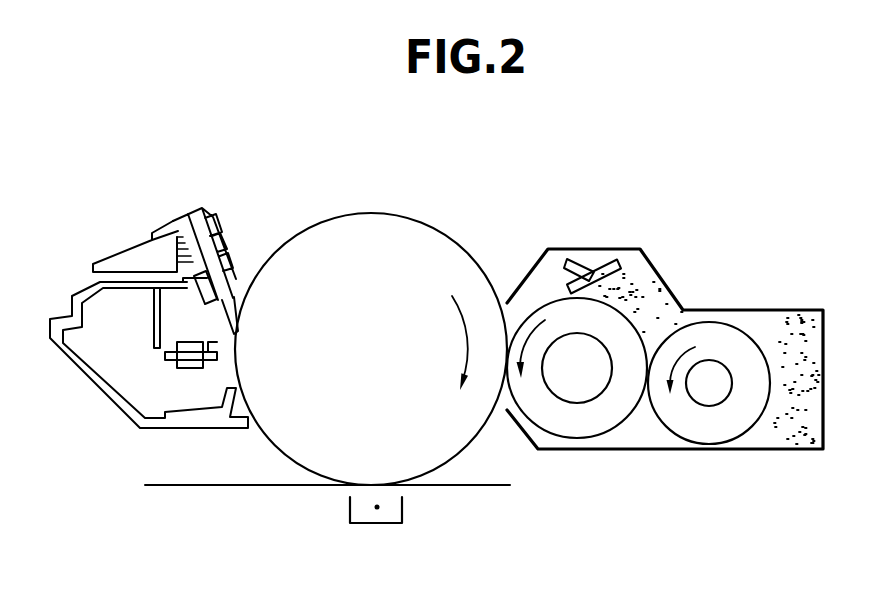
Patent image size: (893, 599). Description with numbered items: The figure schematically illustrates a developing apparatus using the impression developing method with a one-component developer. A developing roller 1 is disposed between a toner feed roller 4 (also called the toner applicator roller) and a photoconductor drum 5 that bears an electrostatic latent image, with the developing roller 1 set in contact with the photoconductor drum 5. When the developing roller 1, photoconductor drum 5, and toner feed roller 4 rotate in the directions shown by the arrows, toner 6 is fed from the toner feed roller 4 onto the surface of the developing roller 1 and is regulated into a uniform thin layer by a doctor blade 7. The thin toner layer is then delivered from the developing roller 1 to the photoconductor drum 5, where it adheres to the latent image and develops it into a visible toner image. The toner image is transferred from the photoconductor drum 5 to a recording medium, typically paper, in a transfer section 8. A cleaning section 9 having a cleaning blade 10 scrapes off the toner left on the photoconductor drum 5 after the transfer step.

The developing roller 1 is at (558, 313).
The toner feed roller 4 is at (712, 337).
The photoconductor drum 5 is at (340, 222).
The toner 6 is at (792, 310).
The doctor blade 7 is at (597, 277).
The transfer section 8 is at (378, 525).
The cleaning section 9 is at (117, 255).
The cleaning blade 10 is at (242, 318).